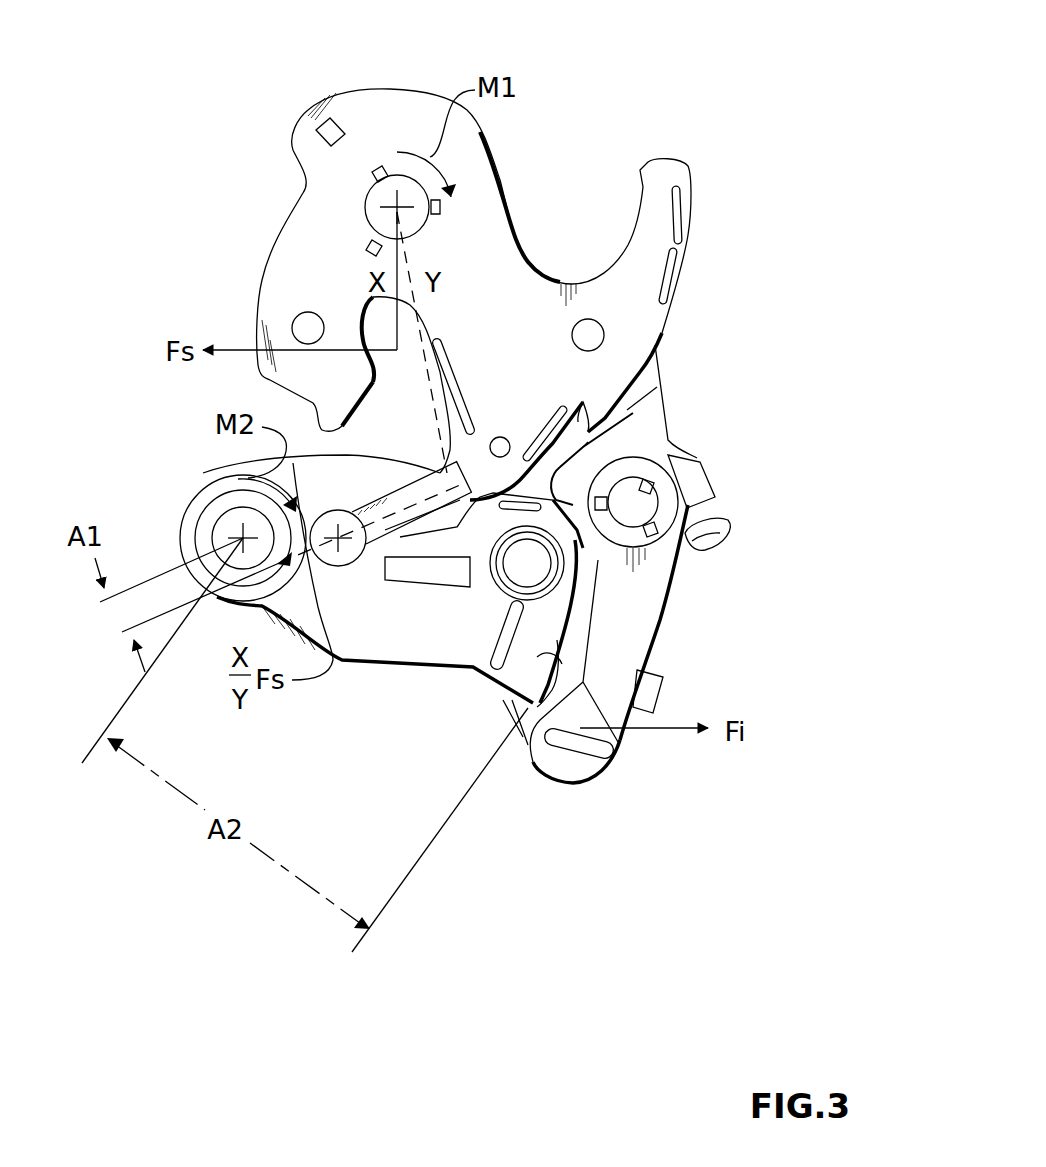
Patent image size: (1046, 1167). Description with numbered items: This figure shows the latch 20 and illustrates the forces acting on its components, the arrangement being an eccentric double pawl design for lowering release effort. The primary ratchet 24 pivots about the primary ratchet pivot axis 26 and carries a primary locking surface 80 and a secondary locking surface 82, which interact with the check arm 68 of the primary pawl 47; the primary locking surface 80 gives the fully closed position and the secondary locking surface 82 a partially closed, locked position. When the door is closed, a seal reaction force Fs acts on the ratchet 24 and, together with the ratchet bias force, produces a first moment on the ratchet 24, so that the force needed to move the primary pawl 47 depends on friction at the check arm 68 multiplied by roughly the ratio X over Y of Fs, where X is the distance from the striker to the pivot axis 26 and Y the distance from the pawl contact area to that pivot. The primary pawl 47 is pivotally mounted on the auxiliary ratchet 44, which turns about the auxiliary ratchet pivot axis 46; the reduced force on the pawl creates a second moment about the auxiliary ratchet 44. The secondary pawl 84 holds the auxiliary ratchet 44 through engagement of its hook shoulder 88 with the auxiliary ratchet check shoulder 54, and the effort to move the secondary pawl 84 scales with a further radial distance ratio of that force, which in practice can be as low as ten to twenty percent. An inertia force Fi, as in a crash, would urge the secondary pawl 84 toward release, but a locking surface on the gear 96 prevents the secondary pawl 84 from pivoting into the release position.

The latch 20 is at (605, 58).
The primary ratchet 24 is at (478, 197).
The primary ratchet pivot axis 26 is at (387, 223).
The auxiliary ratchet 44 is at (190, 501).
The auxiliary ratchet pivot axis 46 is at (238, 532).
The primary pawl 47 is at (388, 470).
The auxiliary ratchet check shoulder 54 is at (505, 705).
The check arm 68 is at (393, 490).
The primary locking surface 80 is at (442, 395).
The secondary locking surface 82 is at (587, 442).
The secondary pawl 84 is at (640, 605).
The hook shoulder 88 is at (520, 743).
The gear 96 is at (728, 520).